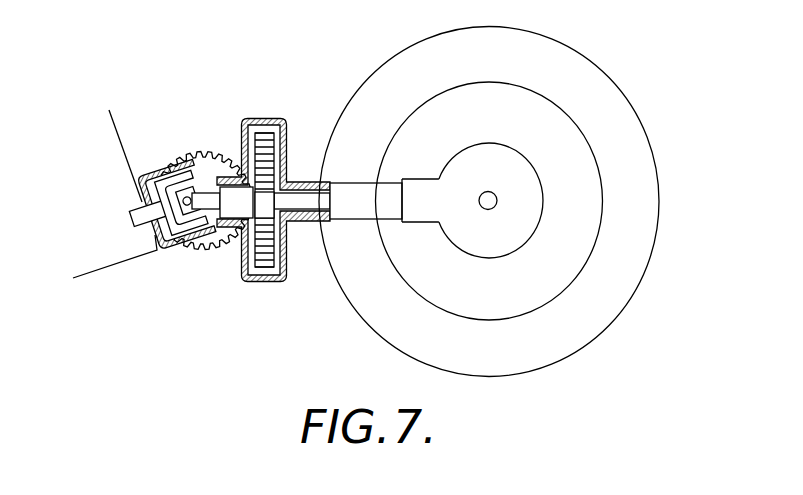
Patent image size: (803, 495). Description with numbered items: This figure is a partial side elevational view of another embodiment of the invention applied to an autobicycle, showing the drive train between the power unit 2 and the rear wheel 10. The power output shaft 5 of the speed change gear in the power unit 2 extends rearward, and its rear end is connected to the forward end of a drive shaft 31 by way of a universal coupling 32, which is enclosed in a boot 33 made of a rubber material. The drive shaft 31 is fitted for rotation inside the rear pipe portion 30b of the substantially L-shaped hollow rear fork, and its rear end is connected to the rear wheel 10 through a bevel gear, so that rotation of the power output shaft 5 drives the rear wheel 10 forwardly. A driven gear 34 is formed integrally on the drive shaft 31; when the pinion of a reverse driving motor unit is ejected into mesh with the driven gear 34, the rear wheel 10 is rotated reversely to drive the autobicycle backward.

The power unit 2 is at (95, 262).
The power output shaft 5 is at (140, 212).
The rear wheel 10 is at (583, 317).
The rear pipe portion 30b is at (363, 190).
The drive shaft 31 is at (303, 206).
The universal coupling 32 is at (182, 240).
The boot 33 is at (191, 153).
The driven gear 34 is at (258, 270).